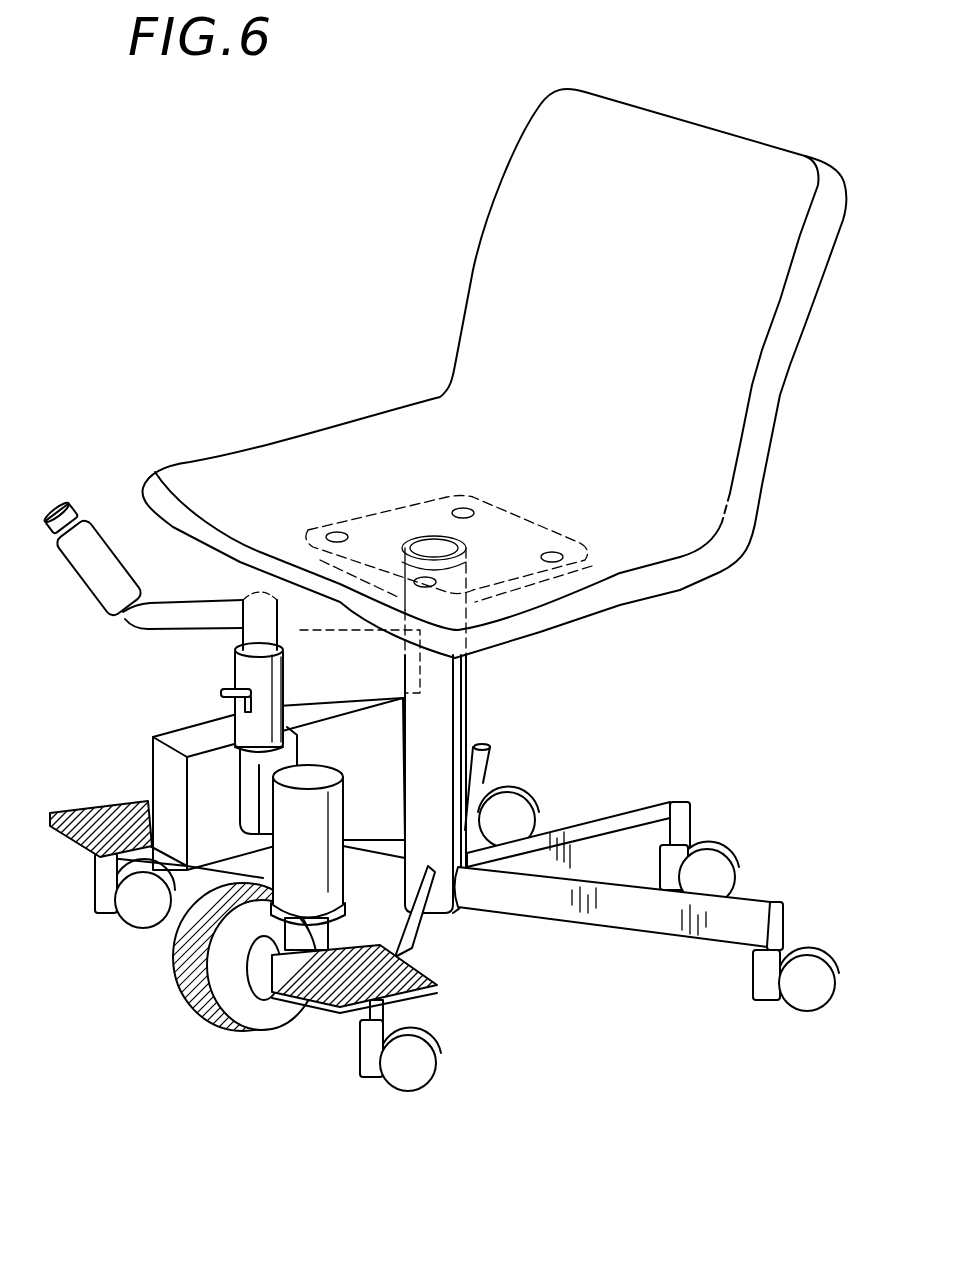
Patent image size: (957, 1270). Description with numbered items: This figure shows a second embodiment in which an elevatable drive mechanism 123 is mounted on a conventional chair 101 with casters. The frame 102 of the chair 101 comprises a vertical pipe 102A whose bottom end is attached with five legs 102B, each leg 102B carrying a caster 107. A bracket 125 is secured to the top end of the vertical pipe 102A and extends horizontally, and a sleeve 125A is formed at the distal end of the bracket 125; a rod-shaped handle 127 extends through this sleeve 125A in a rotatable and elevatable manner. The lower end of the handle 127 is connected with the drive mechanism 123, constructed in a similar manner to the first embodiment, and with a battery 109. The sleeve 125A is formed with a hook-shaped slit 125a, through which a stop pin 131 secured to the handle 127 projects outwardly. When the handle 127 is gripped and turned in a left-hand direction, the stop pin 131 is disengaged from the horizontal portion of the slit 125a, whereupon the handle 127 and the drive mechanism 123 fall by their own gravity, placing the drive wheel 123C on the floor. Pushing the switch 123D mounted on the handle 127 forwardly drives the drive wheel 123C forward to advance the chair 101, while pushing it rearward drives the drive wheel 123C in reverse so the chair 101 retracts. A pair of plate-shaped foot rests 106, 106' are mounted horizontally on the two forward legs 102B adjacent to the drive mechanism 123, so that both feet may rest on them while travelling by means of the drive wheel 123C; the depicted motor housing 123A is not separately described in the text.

The chair 101 is at (455, 296).
The frame 102 is at (496, 783).
The vertical pipe 102A is at (448, 742).
The leg 102B is at (490, 763).
The caster 107 is at (527, 802).
The foot rest 106 is at (391, 1004).
The foot rest 106' is at (120, 850).
The battery 109 is at (153, 757).
The drive mechanism 123 is at (282, 982).
The drive motor 123A is at (320, 833).
The drive wheel 123C is at (217, 990).
The switch 123D is at (60, 517).
The bracket 125 is at (303, 667).
The sleeve 125A is at (240, 667).
The hook-shaped slit 125a is at (283, 703).
The handle 127 is at (80, 565).
The stop pin 131 is at (222, 697).